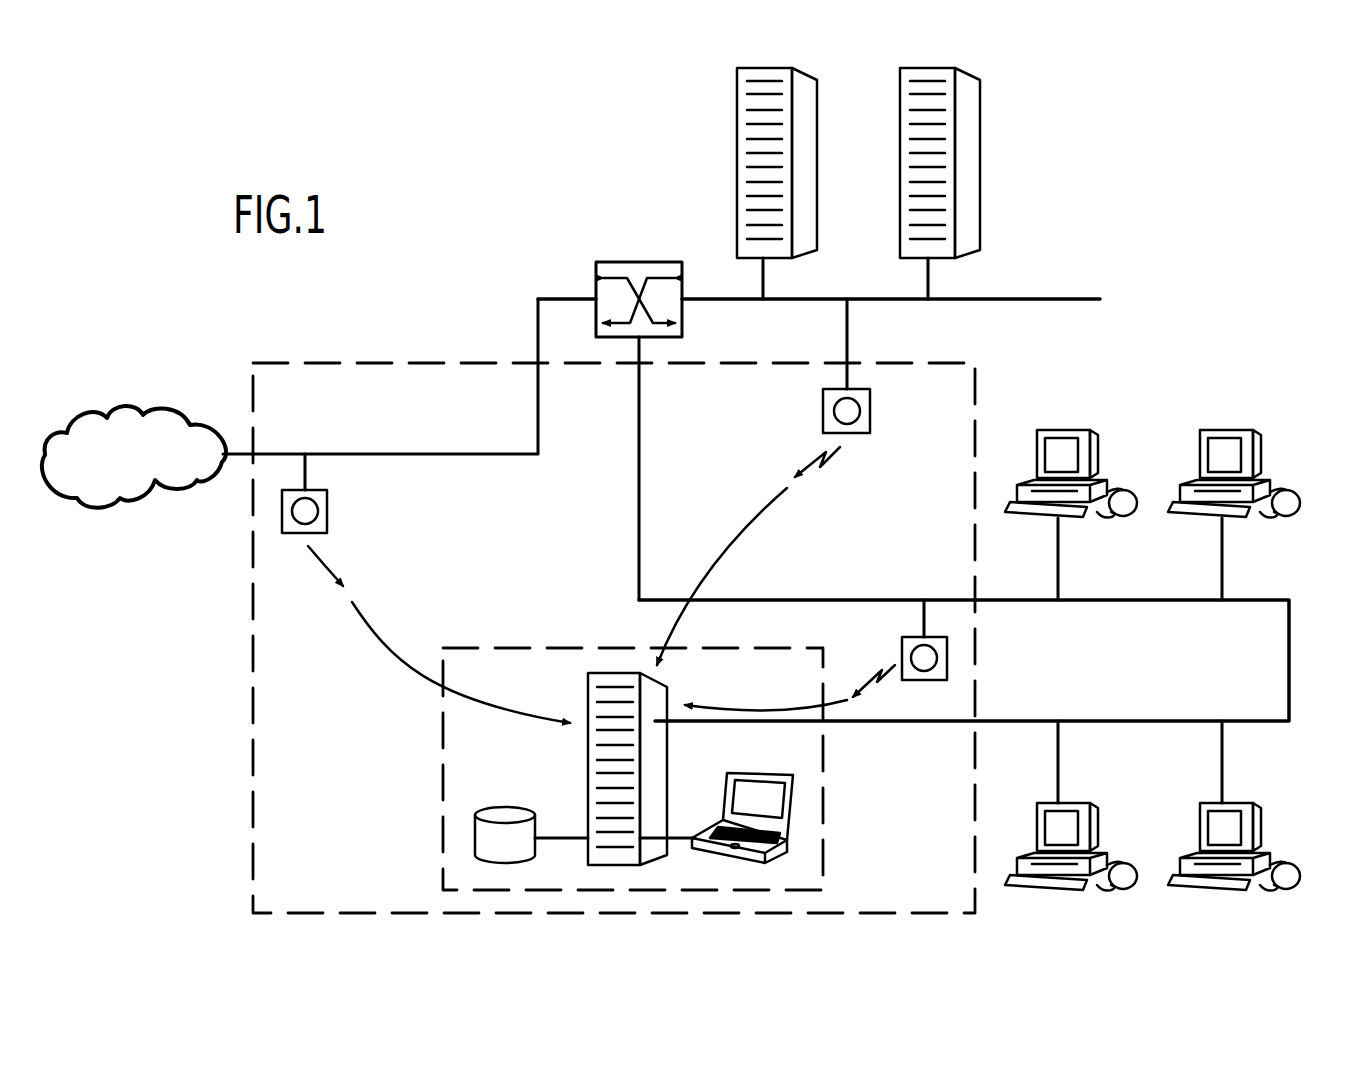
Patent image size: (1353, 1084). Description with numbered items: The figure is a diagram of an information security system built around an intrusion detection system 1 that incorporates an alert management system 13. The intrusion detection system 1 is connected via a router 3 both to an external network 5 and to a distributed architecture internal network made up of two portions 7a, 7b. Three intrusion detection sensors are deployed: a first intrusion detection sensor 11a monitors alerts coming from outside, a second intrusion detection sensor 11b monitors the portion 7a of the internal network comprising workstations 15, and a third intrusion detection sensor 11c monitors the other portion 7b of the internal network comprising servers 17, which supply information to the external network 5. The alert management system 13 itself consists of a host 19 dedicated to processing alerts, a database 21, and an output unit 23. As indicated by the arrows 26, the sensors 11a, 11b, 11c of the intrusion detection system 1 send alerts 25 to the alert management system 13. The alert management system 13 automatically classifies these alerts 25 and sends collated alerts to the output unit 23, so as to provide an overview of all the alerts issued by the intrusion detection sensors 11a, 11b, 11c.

The intrusion detection system 1 is at (252, 848).
The router 3 is at (641, 270).
The external network 5 is at (145, 438).
The portion of the internal network 7a is at (1292, 678).
The portion of the internal network 7b is at (1072, 290).
The first intrusion detection sensor 11a is at (283, 502).
The second intrusion detection sensor 11b is at (947, 653).
The third intrusion detection sensor 11c is at (852, 407).
The alert management system 13 is at (440, 827).
The workstations 15 is at (1203, 467).
The servers 17 is at (900, 145).
The host 19 is at (593, 790).
The database 21 is at (503, 813).
The output unit 23 is at (740, 793).
The alerts 25 is at (318, 565).
The arrows 26 is at (372, 632).